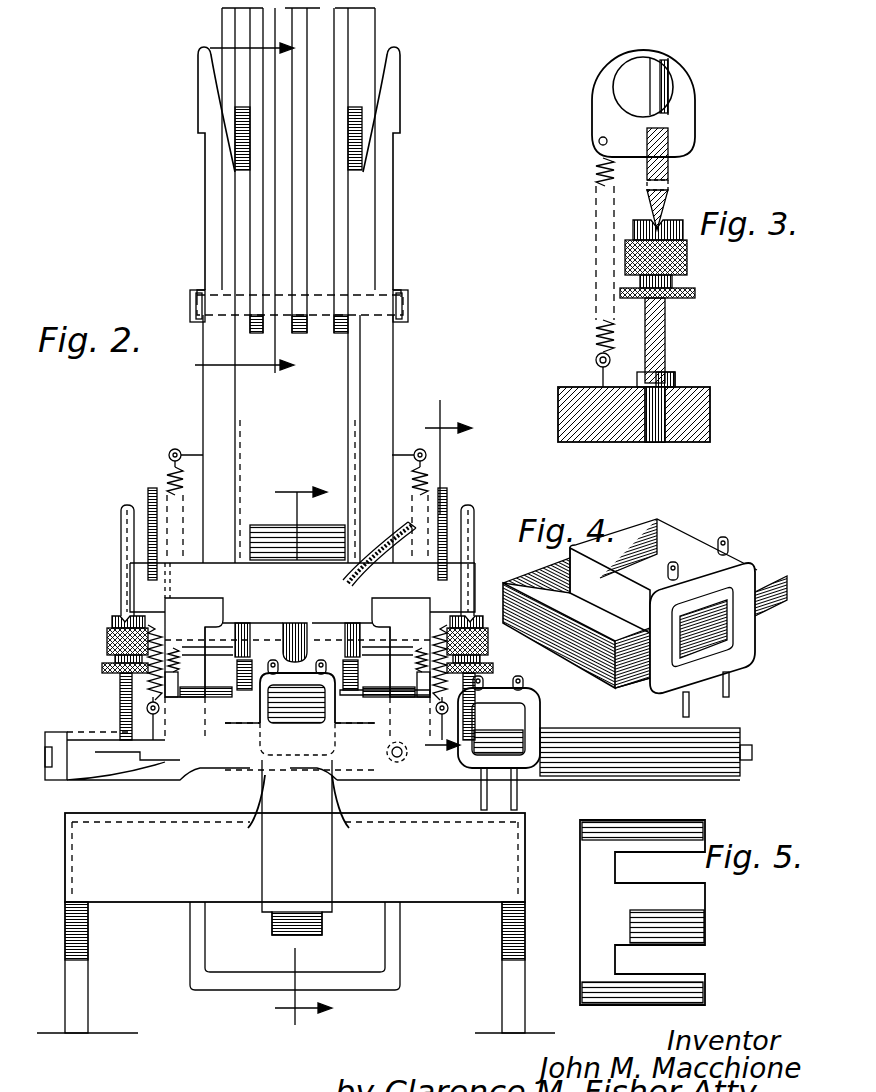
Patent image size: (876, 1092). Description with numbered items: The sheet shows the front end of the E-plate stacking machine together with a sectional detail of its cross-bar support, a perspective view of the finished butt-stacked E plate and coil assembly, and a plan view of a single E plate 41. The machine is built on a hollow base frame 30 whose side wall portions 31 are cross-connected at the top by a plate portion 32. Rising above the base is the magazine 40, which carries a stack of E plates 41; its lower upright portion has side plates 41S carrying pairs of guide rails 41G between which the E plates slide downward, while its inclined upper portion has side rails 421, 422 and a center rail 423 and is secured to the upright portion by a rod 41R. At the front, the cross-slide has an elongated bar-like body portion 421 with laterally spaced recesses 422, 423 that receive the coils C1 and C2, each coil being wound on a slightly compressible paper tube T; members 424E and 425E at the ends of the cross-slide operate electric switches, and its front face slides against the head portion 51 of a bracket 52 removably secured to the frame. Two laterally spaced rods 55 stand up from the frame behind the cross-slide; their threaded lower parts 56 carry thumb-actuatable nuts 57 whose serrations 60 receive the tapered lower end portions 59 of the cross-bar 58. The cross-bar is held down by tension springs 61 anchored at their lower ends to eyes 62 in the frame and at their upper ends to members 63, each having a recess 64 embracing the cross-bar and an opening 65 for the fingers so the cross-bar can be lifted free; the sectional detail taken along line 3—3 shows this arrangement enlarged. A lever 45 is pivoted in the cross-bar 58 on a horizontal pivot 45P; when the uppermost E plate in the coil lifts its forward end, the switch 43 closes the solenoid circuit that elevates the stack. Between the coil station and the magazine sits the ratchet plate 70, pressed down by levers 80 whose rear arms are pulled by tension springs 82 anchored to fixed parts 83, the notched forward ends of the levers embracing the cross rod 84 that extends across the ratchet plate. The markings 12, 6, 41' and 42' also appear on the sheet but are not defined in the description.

In FIG. 2, the section line arrow 12 is at (222, 209).
In FIG. 2, the magazine 40 is at (395, 201).
In FIG. 2, the E plate 41 is at (297, 527).
In FIG. 4, the E plate 41 is at (647, 603).
In FIG. 5, the E plate 41 is at (642, 912).
In FIG. 2, the inner rod 41' is at (293, 133).
In FIG. 2, the side plates 41S is at (205, 247).
In FIG. 2, the rod 41R is at (310, 322).
In FIG. 2, the guide rails 41G is at (355, 388).
In FIG. 2, the side rail 421 is at (370, 73).
In FIG. 2, the side rail 422 is at (225, 92).
In FIG. 2, the center rail 423 is at (293, 193).
In FIG. 2, the section line 3— 3 is at (448, 578).
In FIG. 2, the section line arrow 6 is at (303, 760).
In FIG. 2, the fixed part 83 is at (169, 454).
In FIG. 2, the spring 82 is at (172, 478).
In FIG. 2, the member 63 is at (148, 495).
In FIG. 3, the member 63 is at (592, 112).
In FIG. 2, the rods 55 is at (121, 520).
In FIG. 3, the rods 55 is at (655, 80).
In FIG. 2, the cross-bar 58 is at (302, 630).
In FIG. 3, the cross-bar 58 is at (668, 165).
In FIG. 2, the tapered lower end portions 59 is at (118, 616).
In FIG. 3, the tapered lower end portions 59 is at (662, 218).
In FIG. 2, the serrations 60 is at (125, 615).
In FIG. 3, the serrations 60 is at (642, 220).
In FIG. 2, the thumb actuatable nuts 57 is at (107, 633).
In FIG. 3, the thumb actuatable nuts 57 is at (687, 255).
In FIG. 2, the threaded parts 56 is at (120, 686).
In FIG. 3, the threaded parts 56 is at (665, 302).
In FIG. 2, the lever 80 is at (179, 683).
In FIG. 2, the rod 84 is at (200, 700).
In FIG. 2, the horizontal pivot 45P is at (258, 637).
In FIG. 2, the ratchet plate 70 is at (354, 679).
In FIG. 2, the electric switch 43 is at (335, 572).
In FIG. 2, the lever 45 is at (292, 633).
In FIG. 2, the coil C1 is at (262, 703).
In FIG. 4, the coil C1 is at (745, 655).
In FIG. 2, the coil C2 is at (532, 718).
In FIG. 2, the paper tube T is at (322, 705).
In FIG. 4, the paper tube T is at (635, 690).
In FIG. 2, the switch-operating member 425E is at (772, 735).
In FIG. 2, the switch-operating member 424E is at (67, 740).
In FIG. 2, the bar end 42' is at (538, 790).
In FIG. 2, the head portion 51 is at (345, 785).
In FIG. 2, the bracket 52 is at (305, 870).
In FIG. 2, the plate portion 32 is at (172, 812).
In FIG. 2, the base frame 30 is at (63, 905).
In FIG. 2, the side wall portions 31 is at (65, 940).
In FIG. 3, the opening 65 is at (625, 78).
In FIG. 3, the recess 64 is at (668, 150).
In FIG. 3, the tension springs 61 is at (596, 325).
In FIG. 3, the eyes 62 is at (596, 360).